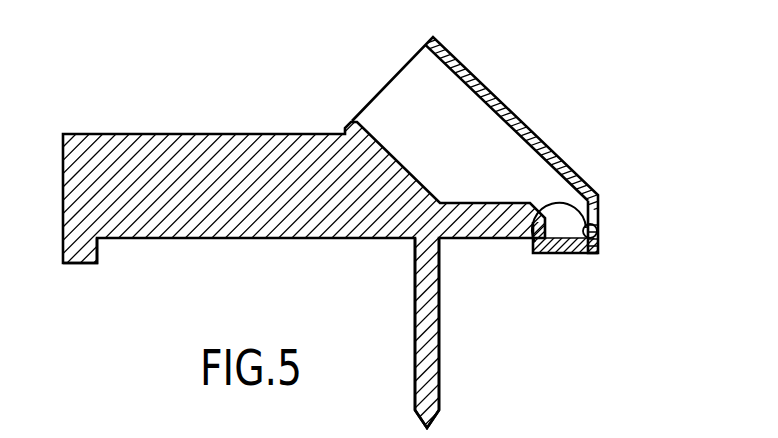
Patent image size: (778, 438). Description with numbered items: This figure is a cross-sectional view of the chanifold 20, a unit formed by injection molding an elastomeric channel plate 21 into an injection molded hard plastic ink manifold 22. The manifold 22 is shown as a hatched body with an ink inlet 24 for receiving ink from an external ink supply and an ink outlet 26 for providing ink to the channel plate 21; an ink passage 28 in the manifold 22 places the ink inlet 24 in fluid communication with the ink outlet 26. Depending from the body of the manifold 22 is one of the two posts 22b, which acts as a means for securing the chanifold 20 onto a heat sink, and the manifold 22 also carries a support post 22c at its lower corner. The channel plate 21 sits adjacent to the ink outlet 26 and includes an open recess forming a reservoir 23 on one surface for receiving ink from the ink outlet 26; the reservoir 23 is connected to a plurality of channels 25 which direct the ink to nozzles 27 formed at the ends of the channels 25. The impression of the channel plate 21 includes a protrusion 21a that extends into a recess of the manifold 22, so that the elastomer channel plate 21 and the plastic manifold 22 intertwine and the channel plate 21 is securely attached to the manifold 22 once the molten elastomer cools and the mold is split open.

The chanifold 20 is at (297, 73).
The channel plate 21 is at (533, 251).
The protrusion 21a is at (579, 197).
The ink manifold 22 is at (133, 143).
The post 22b is at (423, 315).
The support post 22c is at (97, 263).
The reservoir 23 is at (572, 257).
The ink inlet 24 is at (393, 47).
The channels 25 is at (595, 257).
The ink outlet 26 is at (601, 215).
The nozzles 27 is at (630, 250).
The ink passage 28 is at (468, 102).